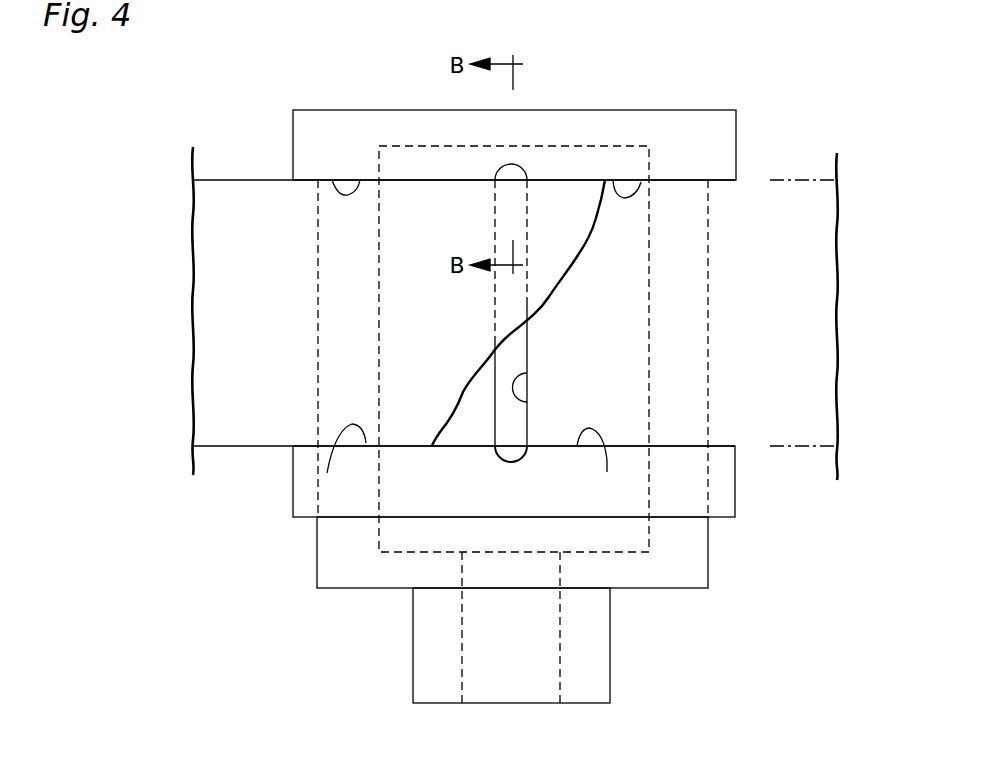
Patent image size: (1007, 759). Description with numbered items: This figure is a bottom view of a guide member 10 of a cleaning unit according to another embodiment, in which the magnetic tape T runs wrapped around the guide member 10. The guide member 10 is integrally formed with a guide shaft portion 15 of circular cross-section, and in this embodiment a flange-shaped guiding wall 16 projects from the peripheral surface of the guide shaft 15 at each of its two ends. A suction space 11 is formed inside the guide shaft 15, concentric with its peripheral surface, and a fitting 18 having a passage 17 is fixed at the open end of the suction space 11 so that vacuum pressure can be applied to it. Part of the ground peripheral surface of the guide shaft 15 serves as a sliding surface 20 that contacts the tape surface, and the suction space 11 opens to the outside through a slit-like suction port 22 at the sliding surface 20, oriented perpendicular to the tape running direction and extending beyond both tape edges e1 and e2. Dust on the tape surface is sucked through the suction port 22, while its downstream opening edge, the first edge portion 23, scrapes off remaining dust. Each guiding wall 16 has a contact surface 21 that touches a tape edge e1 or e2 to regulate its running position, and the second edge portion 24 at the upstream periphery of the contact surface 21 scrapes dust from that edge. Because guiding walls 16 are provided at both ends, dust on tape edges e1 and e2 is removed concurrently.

The guide member 10 is at (550, 392).
The suction space 11 is at (628, 290).
The guide shaft portion 15 is at (708, 342).
The guiding wall 16 is at (722, 152).
The passage 17 is at (558, 668).
The fitting 18 is at (612, 608).
The sliding surface 20 is at (548, 425).
The contact surface 21 is at (641, 182).
The suction port 22 is at (515, 353).
The first edge portion 23 is at (530, 402).
The second edge portion 24 is at (332, 180).
The magnetic tape T is at (225, 310).
The tape edge e1 is at (240, 180).
The other tape edge e2 is at (243, 446).